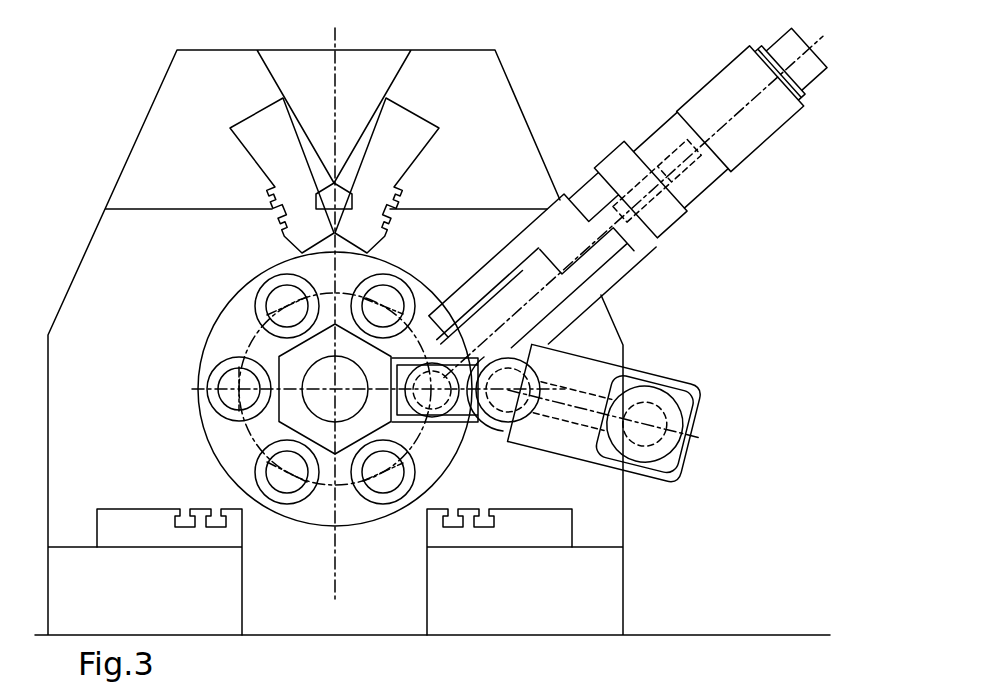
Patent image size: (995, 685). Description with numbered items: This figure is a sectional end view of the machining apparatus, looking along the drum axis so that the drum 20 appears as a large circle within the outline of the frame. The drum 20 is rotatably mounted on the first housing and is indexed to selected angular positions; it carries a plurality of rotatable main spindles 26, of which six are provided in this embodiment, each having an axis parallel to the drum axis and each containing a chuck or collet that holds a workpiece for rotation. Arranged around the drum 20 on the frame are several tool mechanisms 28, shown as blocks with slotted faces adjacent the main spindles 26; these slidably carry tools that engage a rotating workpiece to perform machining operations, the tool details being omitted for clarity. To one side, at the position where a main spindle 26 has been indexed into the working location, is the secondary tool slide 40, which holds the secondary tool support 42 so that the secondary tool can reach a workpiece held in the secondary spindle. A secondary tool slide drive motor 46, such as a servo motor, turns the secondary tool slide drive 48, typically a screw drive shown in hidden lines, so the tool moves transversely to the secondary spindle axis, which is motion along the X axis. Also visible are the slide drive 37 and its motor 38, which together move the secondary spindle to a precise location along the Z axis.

The drum 20 is at (222, 467).
The main spindles 26 is at (253, 282).
The tool mechanisms 28 is at (250, 163).
The slide drive 37 is at (563, 430).
The motor 38 is at (690, 478).
The secondary tool slide 40 is at (628, 264).
The secondary tool support 42 is at (470, 325).
The secondary tool slide drive motor 46 is at (727, 67).
The secondary tool slide drive 48 is at (648, 198).